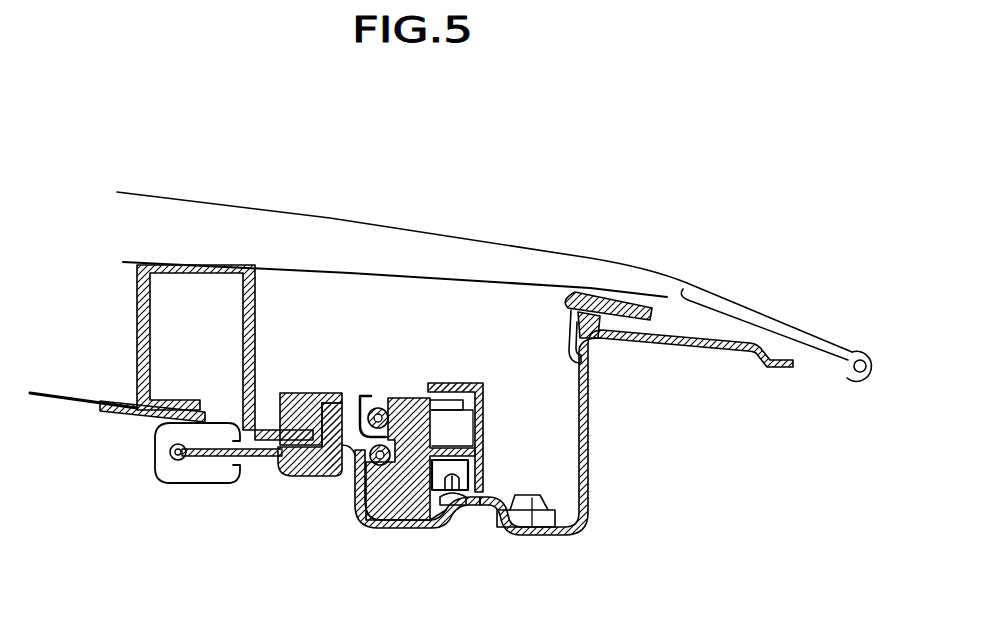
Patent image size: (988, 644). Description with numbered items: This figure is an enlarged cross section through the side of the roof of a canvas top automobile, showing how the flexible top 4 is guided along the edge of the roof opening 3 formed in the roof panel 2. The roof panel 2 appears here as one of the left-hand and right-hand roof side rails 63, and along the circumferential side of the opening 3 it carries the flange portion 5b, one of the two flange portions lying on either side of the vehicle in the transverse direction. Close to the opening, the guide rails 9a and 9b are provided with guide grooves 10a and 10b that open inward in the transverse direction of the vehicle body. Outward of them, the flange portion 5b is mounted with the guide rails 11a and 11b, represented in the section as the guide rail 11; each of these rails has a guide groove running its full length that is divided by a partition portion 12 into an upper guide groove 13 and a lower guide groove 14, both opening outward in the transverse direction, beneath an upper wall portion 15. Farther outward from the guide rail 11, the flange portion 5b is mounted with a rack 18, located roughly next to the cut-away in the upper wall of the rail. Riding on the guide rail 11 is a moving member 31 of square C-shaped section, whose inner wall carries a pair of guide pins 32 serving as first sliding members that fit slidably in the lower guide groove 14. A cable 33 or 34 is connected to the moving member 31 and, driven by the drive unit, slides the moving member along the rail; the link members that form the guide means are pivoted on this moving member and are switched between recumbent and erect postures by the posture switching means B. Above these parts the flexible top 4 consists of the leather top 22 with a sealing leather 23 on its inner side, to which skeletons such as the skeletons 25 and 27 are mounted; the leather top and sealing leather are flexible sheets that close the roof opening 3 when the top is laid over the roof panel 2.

The roof panel 2 is at (636, 413).
The roof side rails 63 is at (662, 345).
The roof opening 3 is at (100, 447).
The flexible top 4 is at (183, 197).
The flange portion 5b is at (480, 503).
The guide rail 9a is at (293, 477).
The guide rail 9b is at (326, 484).
The guide groove 10a is at (293, 410).
The guide groove 10b is at (261, 355).
The guide rail 11 is at (404, 397).
The guide rail 11a is at (385, 527).
The guide rail 11b is at (412, 528).
The partition portion 12 is at (462, 454).
The upper guide groove 13 is at (450, 422).
The lower guide groove 14 is at (458, 508).
The upper wall portion 15 is at (442, 396).
The rack 18 is at (552, 558).
The posture switching means B is at (532, 530).
The leather top 22 is at (270, 225).
The sealing leather 23 is at (60, 402).
The skeleton 25 is at (218, 484).
The skeleton 27 is at (262, 442).
The moving member 31 is at (476, 384).
The guide pin 32 is at (443, 528).
The cable 33 is at (380, 405).
The cable 34 is at (327, 400).